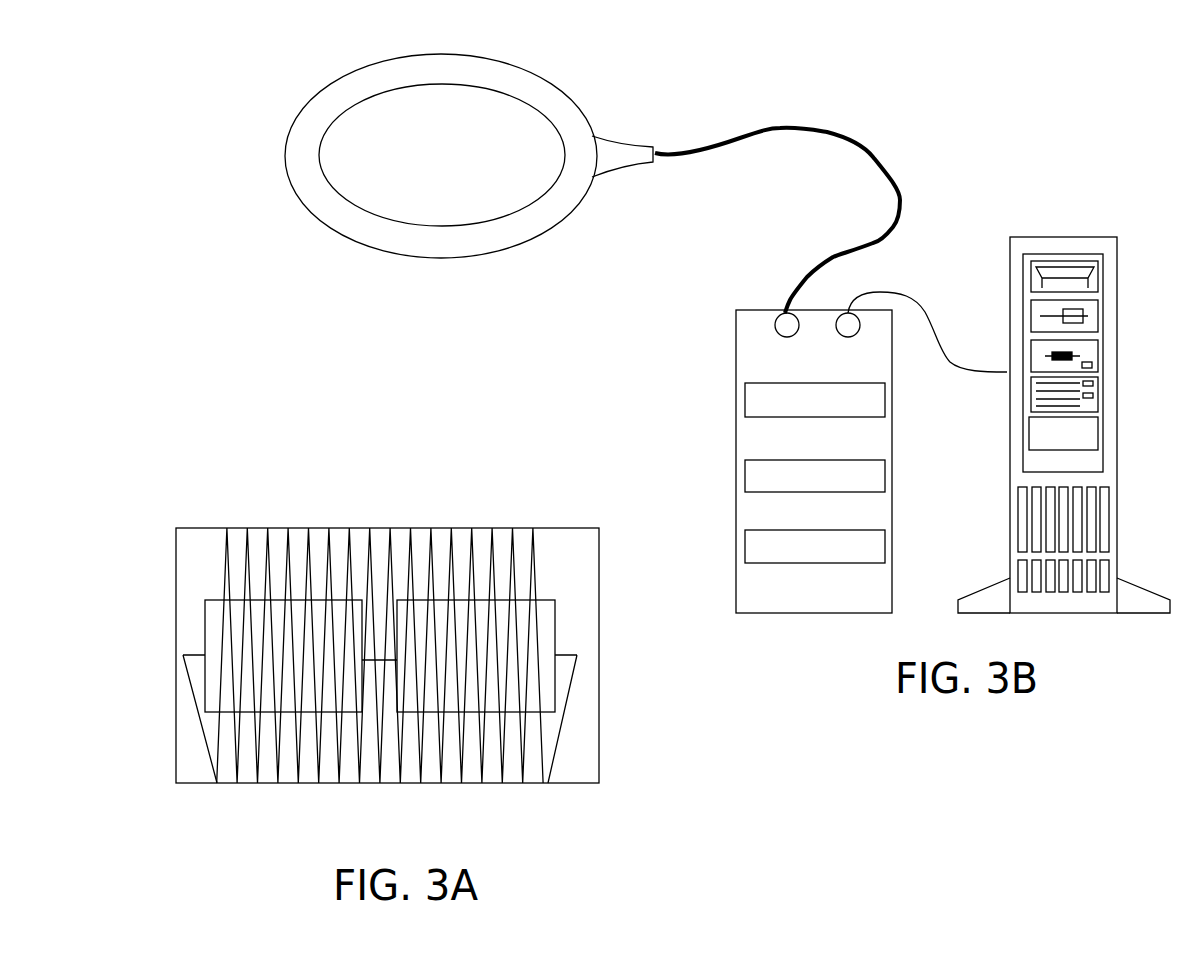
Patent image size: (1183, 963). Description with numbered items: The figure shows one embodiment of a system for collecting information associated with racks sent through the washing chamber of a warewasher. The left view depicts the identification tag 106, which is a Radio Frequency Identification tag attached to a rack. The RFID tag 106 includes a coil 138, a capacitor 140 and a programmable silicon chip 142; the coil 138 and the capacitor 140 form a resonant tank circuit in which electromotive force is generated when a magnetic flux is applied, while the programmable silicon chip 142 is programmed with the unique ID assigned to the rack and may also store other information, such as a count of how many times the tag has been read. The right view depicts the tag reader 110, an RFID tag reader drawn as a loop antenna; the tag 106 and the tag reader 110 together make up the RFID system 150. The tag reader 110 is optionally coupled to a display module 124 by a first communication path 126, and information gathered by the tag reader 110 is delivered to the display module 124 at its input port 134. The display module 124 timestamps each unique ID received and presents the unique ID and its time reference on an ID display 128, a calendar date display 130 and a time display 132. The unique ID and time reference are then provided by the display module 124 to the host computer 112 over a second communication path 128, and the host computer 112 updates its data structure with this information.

In FIG. 3A, the identification tag 106 is at (586, 527).
In FIG. 3A, the coil 138 is at (369, 550).
In FIG. 3A, the programmable silicon chip 142 is at (205, 604).
In FIG. 3A, the capacitor 140 is at (555, 620).
In FIG. 3B, the RFID system 150 is at (147, 111).
In FIG. 3B, the tag reader 110 is at (589, 116).
In FIG. 3B, the first communication path 126 is at (842, 137).
In FIG. 3B, the display module 124 is at (725, 417).
In FIG. 3B, the input port 134 is at (774, 333).
In FIG. 3B, the ID display 128 is at (924, 305).
In FIG. 3B, the calendar date display 130 is at (885, 478).
In FIG. 3B, the time display 132 is at (885, 545).
In FIG. 3B, the host computer 112 is at (1060, 236).